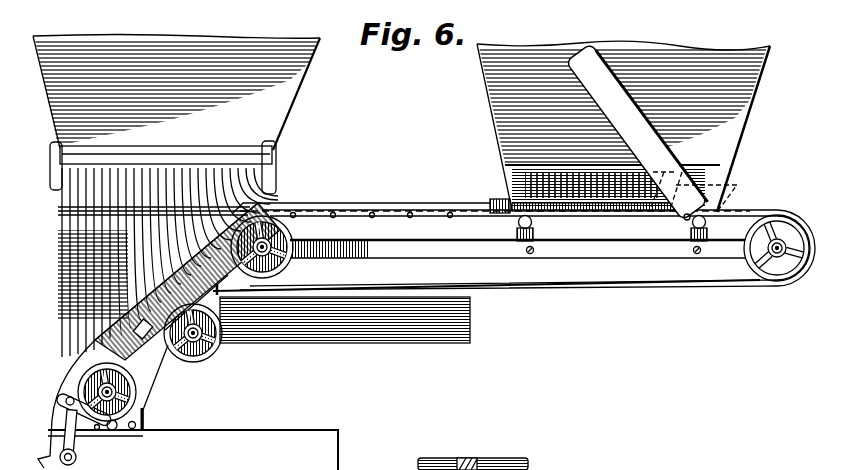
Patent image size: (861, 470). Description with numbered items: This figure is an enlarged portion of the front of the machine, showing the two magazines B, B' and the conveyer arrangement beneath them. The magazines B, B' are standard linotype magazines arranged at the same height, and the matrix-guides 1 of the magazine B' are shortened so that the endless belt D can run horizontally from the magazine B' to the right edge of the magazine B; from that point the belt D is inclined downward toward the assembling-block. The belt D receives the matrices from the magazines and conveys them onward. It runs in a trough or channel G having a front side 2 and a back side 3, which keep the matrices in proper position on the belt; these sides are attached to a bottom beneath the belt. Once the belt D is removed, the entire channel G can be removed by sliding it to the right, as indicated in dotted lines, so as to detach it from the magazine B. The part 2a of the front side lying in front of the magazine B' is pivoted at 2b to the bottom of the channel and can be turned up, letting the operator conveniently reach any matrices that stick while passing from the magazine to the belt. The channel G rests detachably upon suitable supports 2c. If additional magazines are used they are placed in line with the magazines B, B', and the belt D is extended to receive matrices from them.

The magazine B is at (176, 115).
The magazine B' is at (623, 126).
The trough or channel G is at (491, 197).
The front side of the channel 2 is at (441, 207).
The pivoted part of the front side 2a is at (651, 131).
The pivot 2b is at (684, 220).
The supports 2c is at (724, 232).
The back side of the channel 3 is at (497, 200).
The matrix-guides 1 is at (577, 178).
The endless belt D is at (561, 294).